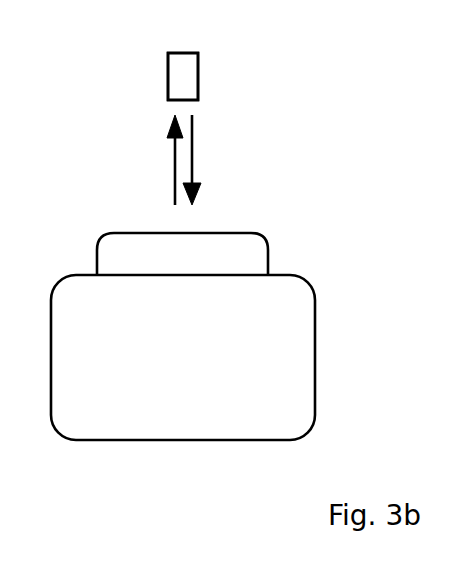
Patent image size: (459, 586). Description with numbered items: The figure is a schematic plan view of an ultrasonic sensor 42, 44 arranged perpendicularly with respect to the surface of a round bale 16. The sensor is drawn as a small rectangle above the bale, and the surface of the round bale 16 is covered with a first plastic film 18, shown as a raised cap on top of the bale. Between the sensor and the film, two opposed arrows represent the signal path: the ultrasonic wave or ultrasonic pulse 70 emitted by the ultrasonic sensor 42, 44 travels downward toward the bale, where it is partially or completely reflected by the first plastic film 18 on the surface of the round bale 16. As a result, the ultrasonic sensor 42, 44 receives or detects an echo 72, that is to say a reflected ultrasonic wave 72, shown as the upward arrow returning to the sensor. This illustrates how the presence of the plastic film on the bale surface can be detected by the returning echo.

The round bale 16 is at (87, 312).
The first plastic film 18 is at (243, 252).
The ultrasonic sensor 42 is at (187, 80).
The ultrasonic sensor 44 is at (183, 76).
The ultrasonic pulse 70 is at (193, 150).
The echo 72 is at (173, 158).